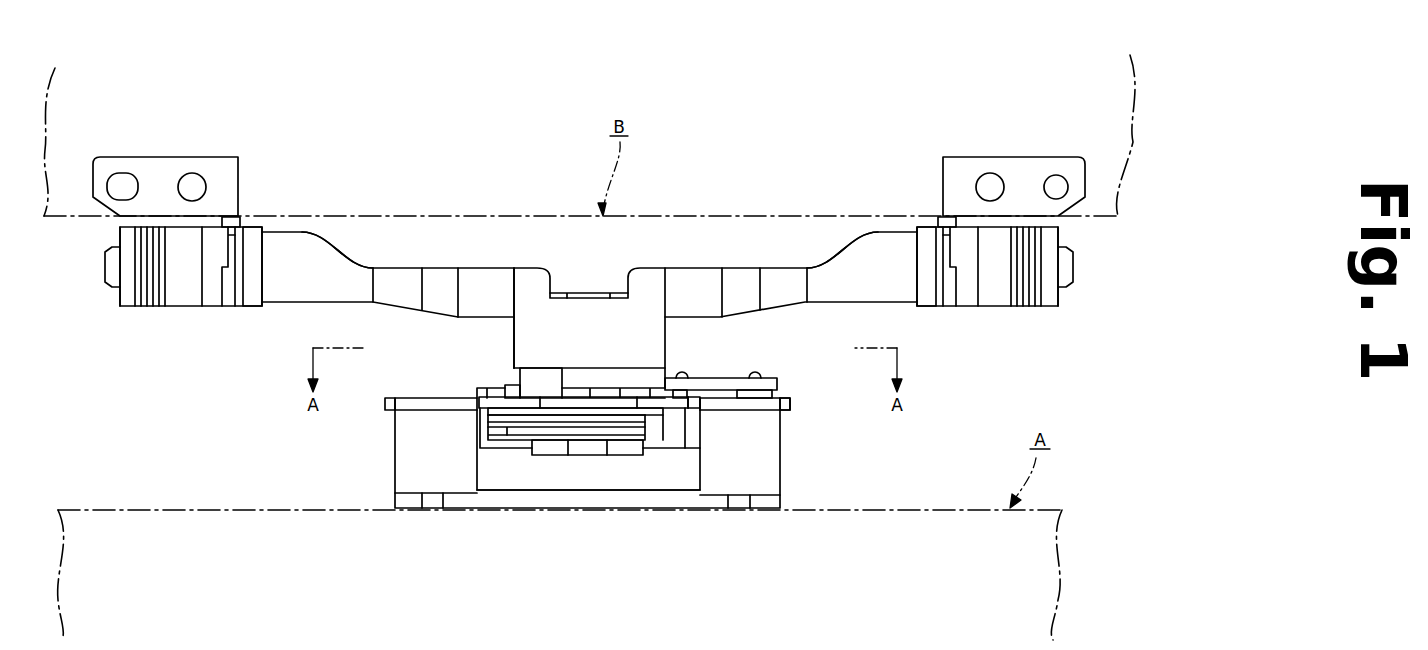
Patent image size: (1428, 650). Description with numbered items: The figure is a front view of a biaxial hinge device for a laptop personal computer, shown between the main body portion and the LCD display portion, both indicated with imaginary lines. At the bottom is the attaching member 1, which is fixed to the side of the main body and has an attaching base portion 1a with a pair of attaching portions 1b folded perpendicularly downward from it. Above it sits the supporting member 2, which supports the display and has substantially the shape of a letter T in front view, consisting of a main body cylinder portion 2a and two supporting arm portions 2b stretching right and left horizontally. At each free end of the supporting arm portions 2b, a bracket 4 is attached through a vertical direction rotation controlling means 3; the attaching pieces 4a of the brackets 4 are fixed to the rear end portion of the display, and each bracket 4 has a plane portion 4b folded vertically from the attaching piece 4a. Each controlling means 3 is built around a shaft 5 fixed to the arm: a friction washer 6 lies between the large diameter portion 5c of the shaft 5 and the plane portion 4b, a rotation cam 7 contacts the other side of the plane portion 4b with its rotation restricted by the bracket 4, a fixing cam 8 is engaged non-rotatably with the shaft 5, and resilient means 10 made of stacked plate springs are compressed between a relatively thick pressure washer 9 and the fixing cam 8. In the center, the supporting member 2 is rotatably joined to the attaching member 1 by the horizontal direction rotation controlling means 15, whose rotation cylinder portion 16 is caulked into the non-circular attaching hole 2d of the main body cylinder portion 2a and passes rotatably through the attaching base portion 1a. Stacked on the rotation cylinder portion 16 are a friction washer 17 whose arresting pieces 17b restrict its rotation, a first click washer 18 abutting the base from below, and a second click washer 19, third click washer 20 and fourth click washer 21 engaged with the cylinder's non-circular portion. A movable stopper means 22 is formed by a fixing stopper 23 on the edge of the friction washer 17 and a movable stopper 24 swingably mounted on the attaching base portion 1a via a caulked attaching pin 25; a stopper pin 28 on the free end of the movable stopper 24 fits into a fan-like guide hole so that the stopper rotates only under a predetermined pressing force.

The attaching member 1 is at (780, 448).
The attaching base portion 1a is at (390, 395).
The attaching portions 1b is at (413, 510).
The supporting member 2 is at (682, 340).
The main body cylinder portion 2a is at (528, 331).
The supporting arm portions 2b is at (405, 270).
The non-circular attaching hole 2d is at (580, 388).
The vertical direction rotation controlling means 3 is at (172, 340).
The bracket 4 is at (218, 157).
The attaching piece 4a is at (160, 165).
The plane portion 4b is at (234, 300).
The shaft 5 is at (105, 265).
The large diameter portion 5c is at (253, 226).
The friction washer 6 is at (245, 252).
The rotation cam 7 is at (212, 297).
The fixing cam 8 is at (185, 297).
The pressure washer 9 is at (120, 300).
The resilient means 10 is at (150, 300).
The horizontal direction rotation controlling means 15 is at (522, 468).
The rotation cylinder portion 16 is at (553, 456).
The friction washer 17 is at (514, 385).
The arresting pieces 17b is at (540, 392).
The first click washer 18 is at (675, 415).
The second click washer 19 is at (646, 422).
The third click washer 20 is at (612, 428).
The fourth click washer 21 is at (588, 442).
The movable stopper means 22 is at (734, 373).
The fixing stopper 23 is at (478, 398).
The movable stopper 24 is at (780, 390).
The attaching pin 25 is at (768, 418).
The stopper pin 28 is at (692, 392).